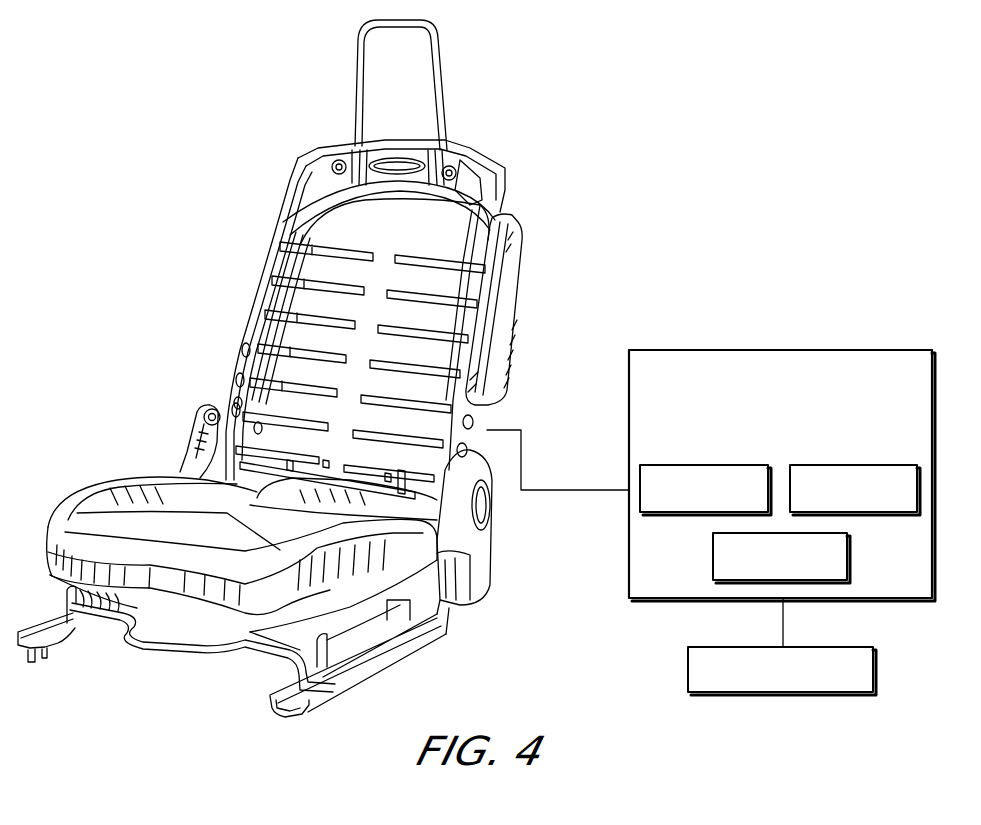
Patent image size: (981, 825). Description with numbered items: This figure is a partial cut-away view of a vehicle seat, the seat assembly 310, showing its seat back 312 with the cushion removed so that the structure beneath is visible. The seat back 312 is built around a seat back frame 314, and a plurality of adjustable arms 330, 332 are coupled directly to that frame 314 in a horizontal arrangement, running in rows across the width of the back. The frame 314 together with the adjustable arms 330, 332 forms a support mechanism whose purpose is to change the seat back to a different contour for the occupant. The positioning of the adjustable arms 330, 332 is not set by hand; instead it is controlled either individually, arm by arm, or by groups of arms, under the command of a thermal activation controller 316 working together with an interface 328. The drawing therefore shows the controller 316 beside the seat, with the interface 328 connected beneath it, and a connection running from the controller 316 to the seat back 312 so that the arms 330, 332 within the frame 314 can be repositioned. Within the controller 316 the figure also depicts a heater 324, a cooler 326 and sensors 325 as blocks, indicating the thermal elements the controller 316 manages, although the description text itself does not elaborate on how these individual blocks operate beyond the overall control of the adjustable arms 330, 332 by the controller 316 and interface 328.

The vehicle seat assembly 310 is at (565, 98).
The seat back 312 is at (582, 200).
The seat back frame 314 is at (508, 187).
The thermal activation controller 316 is at (862, 350).
The heater 324 is at (708, 465).
The sensors 325 is at (848, 562).
The cooler 326 is at (852, 465).
The interface 328 is at (757, 647).
The adjustable arm 330 is at (562, 215).
The adjustable arm 332 is at (243, 183).